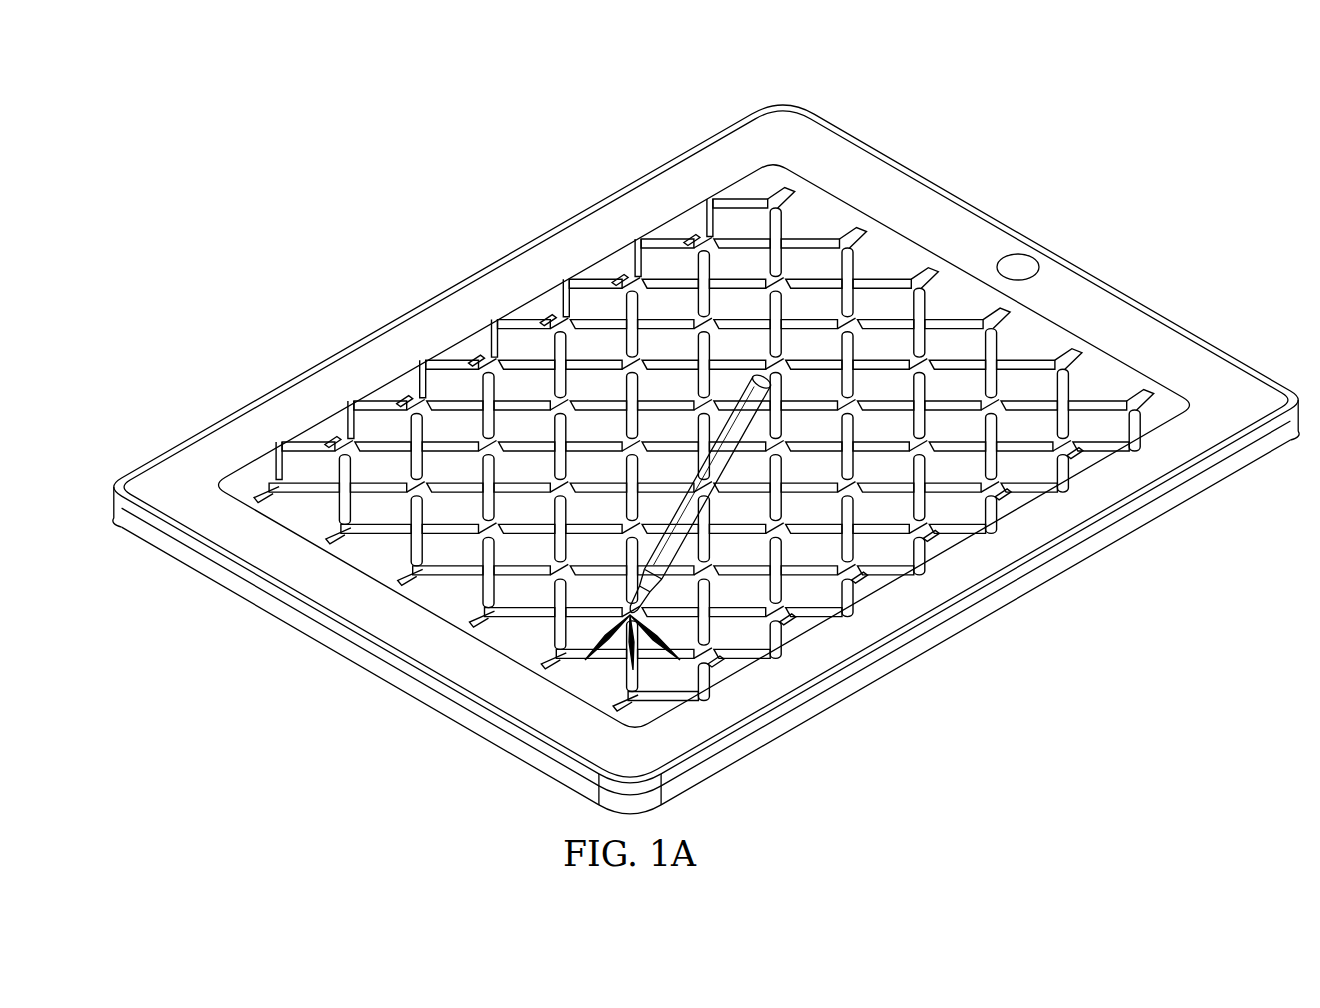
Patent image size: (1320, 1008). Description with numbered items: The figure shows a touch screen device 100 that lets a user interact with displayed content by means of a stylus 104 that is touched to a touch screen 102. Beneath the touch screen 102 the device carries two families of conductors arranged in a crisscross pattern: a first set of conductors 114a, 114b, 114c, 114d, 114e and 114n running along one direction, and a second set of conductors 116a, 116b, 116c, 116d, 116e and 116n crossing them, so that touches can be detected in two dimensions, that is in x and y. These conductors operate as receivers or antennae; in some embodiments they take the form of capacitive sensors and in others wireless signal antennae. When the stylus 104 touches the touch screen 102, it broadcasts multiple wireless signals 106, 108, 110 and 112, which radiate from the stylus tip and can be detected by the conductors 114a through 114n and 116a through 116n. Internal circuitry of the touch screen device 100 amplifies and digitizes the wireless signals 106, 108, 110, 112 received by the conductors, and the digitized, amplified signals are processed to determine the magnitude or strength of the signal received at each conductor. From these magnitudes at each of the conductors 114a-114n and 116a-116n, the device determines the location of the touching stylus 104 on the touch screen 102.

The touch screen device 100 is at (782, 103).
The touch screen 102 is at (862, 590).
The stylus 104 is at (702, 478).
The wireless signal 106 is at (597, 611).
The wireless signal 108 is at (572, 621).
The wireless signal 110 is at (611, 672).
The wireless signal 112 is at (722, 656).
The conductor 114a is at (737, 196).
The conductor 114b is at (809, 236).
The conductor 114c is at (880, 277).
The conductor 114d is at (952, 317).
The conductor 114e is at (1024, 358).
The conductor 114n is at (1096, 398).
The conductor 116a is at (688, 258).
The conductor 116b is at (616, 299).
The conductor 116c is at (544, 339).
The conductor 116d is at (473, 380).
The conductor 116e is at (401, 420).
The conductor 116n is at (329, 461).